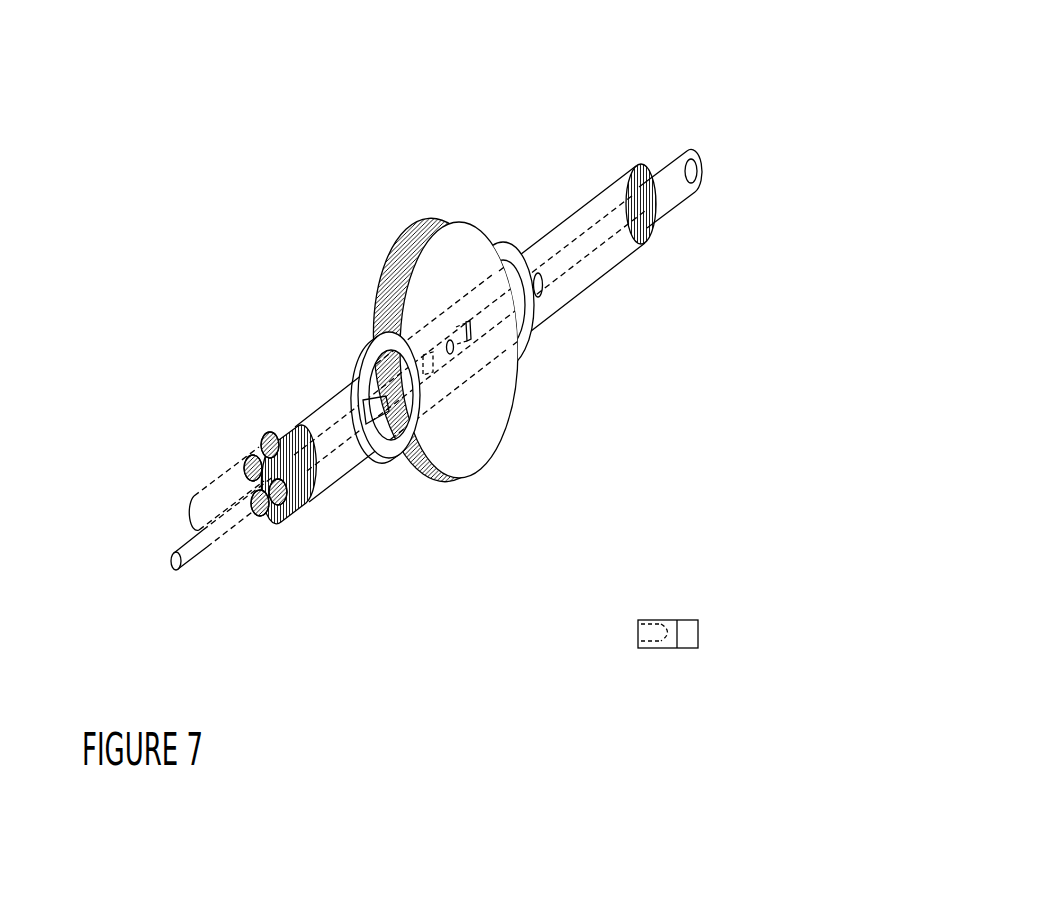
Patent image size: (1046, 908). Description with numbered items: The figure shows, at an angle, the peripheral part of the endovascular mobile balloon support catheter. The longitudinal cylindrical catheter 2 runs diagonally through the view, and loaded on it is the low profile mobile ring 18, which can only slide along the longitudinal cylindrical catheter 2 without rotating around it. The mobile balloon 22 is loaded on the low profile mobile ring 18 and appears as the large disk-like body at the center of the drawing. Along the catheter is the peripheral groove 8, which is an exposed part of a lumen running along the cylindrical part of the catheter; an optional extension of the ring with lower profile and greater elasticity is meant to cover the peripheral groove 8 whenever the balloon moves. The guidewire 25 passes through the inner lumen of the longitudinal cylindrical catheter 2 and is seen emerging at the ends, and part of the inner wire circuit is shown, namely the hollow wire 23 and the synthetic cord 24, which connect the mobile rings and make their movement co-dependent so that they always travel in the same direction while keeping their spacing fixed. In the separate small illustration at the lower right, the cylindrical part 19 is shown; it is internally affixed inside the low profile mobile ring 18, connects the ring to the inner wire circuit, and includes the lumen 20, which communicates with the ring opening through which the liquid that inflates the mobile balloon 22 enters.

The longitudinal cylindrical catheter 2 is at (572, 212).
The peripheral groove 8 is at (538, 274).
The low profile mobile ring 18 is at (528, 338).
The cylindrical part 19 is at (464, 342).
The lumen 20 is at (450, 356).
The mobile balloon 22 is at (458, 260).
The hollow wire 23 is at (695, 160).
The synthetic cord 24 is at (651, 167).
The guidewire 25 is at (192, 560).